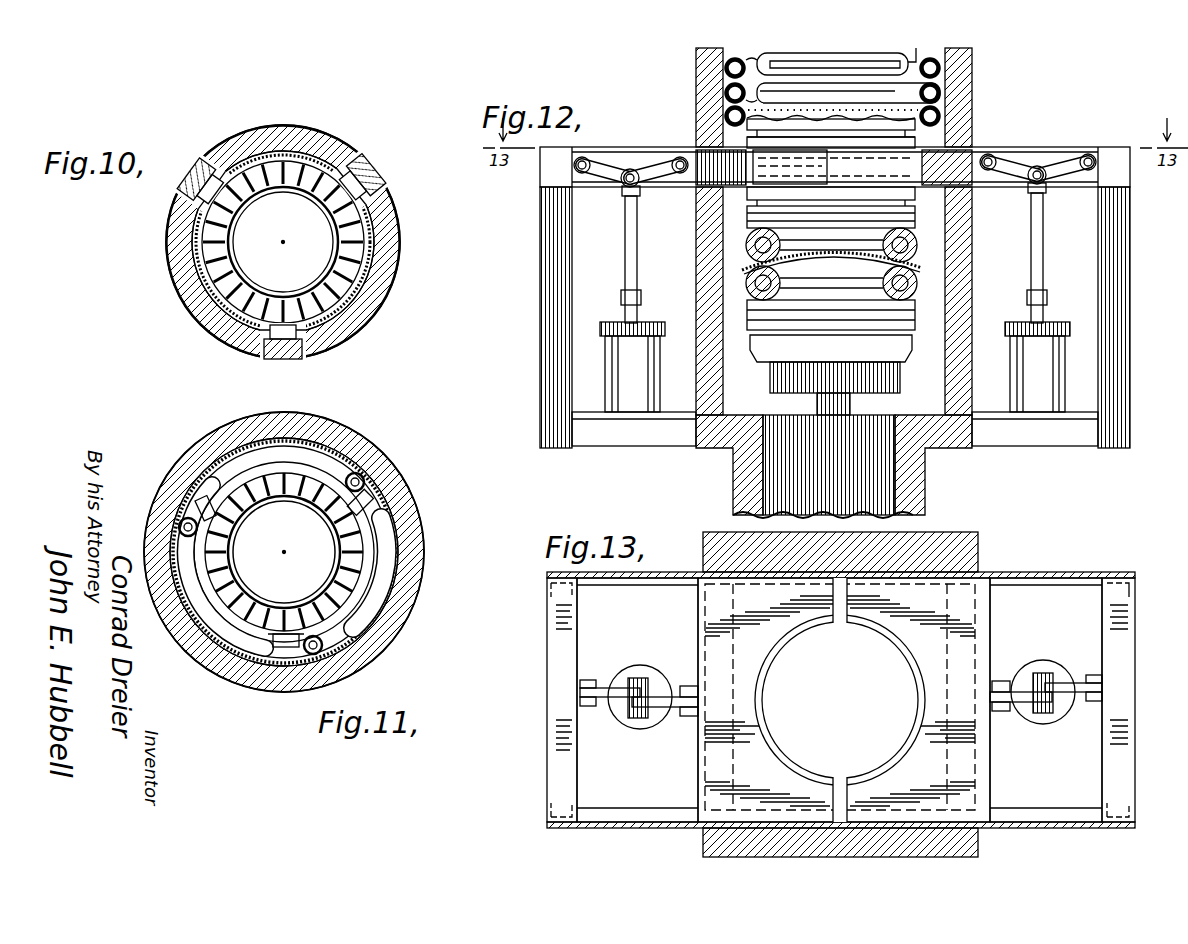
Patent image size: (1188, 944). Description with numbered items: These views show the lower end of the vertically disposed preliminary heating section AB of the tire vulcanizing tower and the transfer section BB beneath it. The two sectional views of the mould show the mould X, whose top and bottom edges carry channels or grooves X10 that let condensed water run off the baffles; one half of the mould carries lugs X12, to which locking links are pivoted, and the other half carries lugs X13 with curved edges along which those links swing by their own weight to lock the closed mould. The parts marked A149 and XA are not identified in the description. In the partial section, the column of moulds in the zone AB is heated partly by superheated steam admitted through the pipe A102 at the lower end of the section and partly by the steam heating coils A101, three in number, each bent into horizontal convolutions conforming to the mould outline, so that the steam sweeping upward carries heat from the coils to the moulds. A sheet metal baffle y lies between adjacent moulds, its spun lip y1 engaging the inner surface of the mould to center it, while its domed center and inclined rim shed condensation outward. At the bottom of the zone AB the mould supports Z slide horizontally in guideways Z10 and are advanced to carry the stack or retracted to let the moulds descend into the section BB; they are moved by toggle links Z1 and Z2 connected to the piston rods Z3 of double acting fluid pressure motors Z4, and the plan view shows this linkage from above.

In FIG. 10, the casing X is at (340, 158).
In FIG. 10, the channels or grooves X10 is at (332, 192).
In FIG. 11, the channels or grooves X10 is at (330, 486).
In FIG. 10, the lugs X12 is at (388, 200).
In FIG. 11, the lugs X12 is at (372, 505).
In FIG. 10, the lugs X13 is at (352, 192).
In FIG. 10, the liner ring A149 is at (385, 186).
In FIG. 10, the preliminary heating section AB is at (388, 283).
In FIG. 11, the preliminary heating section AB is at (412, 500).
In FIG. 12, the preliminary heating section AB is at (972, 72).
In FIG. 11, the hub XA is at (327, 507).
In FIG. 11, the steam heating coils A101 is at (380, 585).
In FIG. 12, the steam heating coils A101 is at (700, 84).
In FIG. 12, the superheated steam pipe A102 is at (972, 99).
In FIG. 12, the mould supports Z is at (703, 162).
In FIG. 13, the mould supports Z is at (844, 694).
In FIG. 12, the guideways Z10 is at (608, 152).
In FIG. 13, the guideways Z10 is at (1075, 558).
In FIG. 12, the toggle link Z1 is at (657, 182).
In FIG. 13, the toggle link Z1 is at (680, 707).
In FIG. 12, the toggle link Z2 is at (608, 182).
In FIG. 13, the toggle link Z2 is at (598, 700).
In FIG. 12, the piston rods Z3 is at (627, 270).
In FIG. 12, the double acting fluid pressure motors Z4 is at (660, 368).
In FIG. 13, the double acting fluid pressure motors Z4 is at (655, 672).
In FIG. 12, the transfer section BB is at (945, 270).
In FIG. 12, the sheet metal baffle y is at (852, 283).
In FIG. 12, the lip y1 is at (812, 282).